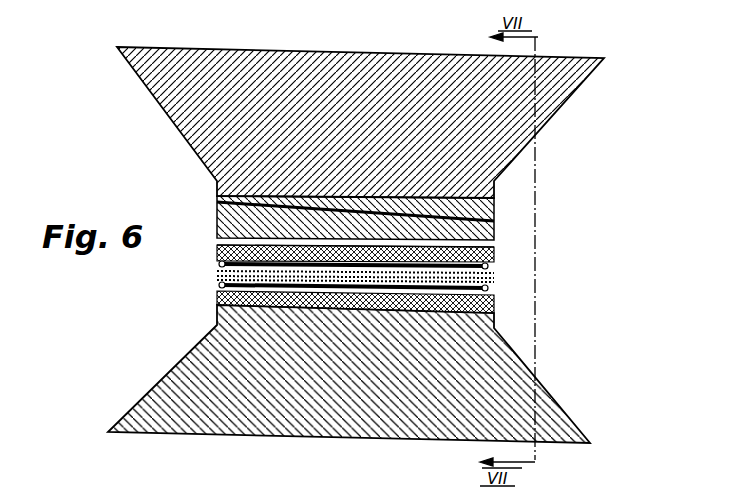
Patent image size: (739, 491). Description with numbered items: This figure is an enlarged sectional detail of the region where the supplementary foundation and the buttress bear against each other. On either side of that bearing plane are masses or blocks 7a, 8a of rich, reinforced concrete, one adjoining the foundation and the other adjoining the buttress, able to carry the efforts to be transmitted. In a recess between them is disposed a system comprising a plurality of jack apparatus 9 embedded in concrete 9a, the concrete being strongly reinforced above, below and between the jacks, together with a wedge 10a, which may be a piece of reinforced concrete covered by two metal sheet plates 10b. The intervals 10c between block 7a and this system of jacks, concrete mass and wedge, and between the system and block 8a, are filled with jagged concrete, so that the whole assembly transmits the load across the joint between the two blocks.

The block of rich reinforced concrete 7a is at (215, 323).
The block of rich reinforced concrete 8a is at (570, 97).
The jack apparatus 9 is at (490, 286).
The concrete 9a is at (217, 270).
The wedge 10a is at (217, 218).
The metal sheet plates 10b is at (494, 223).
The intervals 10c is at (494, 200).